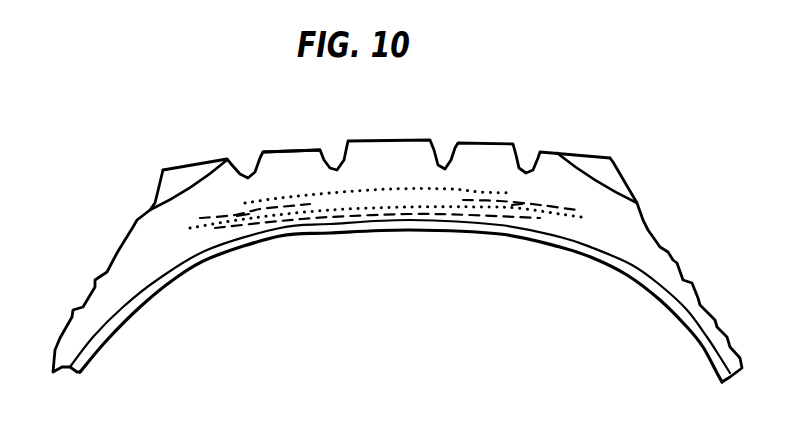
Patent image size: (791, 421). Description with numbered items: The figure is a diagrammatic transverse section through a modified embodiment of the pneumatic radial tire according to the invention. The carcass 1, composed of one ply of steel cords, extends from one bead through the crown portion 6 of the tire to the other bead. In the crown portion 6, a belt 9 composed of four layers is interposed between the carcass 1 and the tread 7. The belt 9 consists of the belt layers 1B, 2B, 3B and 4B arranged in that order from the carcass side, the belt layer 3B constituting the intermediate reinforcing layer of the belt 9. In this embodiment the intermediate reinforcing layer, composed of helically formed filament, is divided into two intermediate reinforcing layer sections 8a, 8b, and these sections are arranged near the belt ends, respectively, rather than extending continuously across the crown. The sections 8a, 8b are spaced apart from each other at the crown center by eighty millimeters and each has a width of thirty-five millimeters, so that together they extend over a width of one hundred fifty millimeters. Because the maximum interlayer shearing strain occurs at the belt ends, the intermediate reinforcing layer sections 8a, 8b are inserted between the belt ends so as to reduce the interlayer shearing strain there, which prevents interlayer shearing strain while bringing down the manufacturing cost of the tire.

The carcass 1 is at (632, 265).
The belt layer 1B is at (341, 218).
The belt layer 2B is at (377, 207).
The belt layer 3B is at (465, 200).
The belt layer 4B is at (410, 190).
The crown portion 6 is at (390, 140).
The tread 7 is at (298, 167).
The intermediate reinforcing layer section 8a is at (245, 217).
The intermediate reinforcing layer section 8b is at (512, 205).
The belt 9 is at (185, 213).